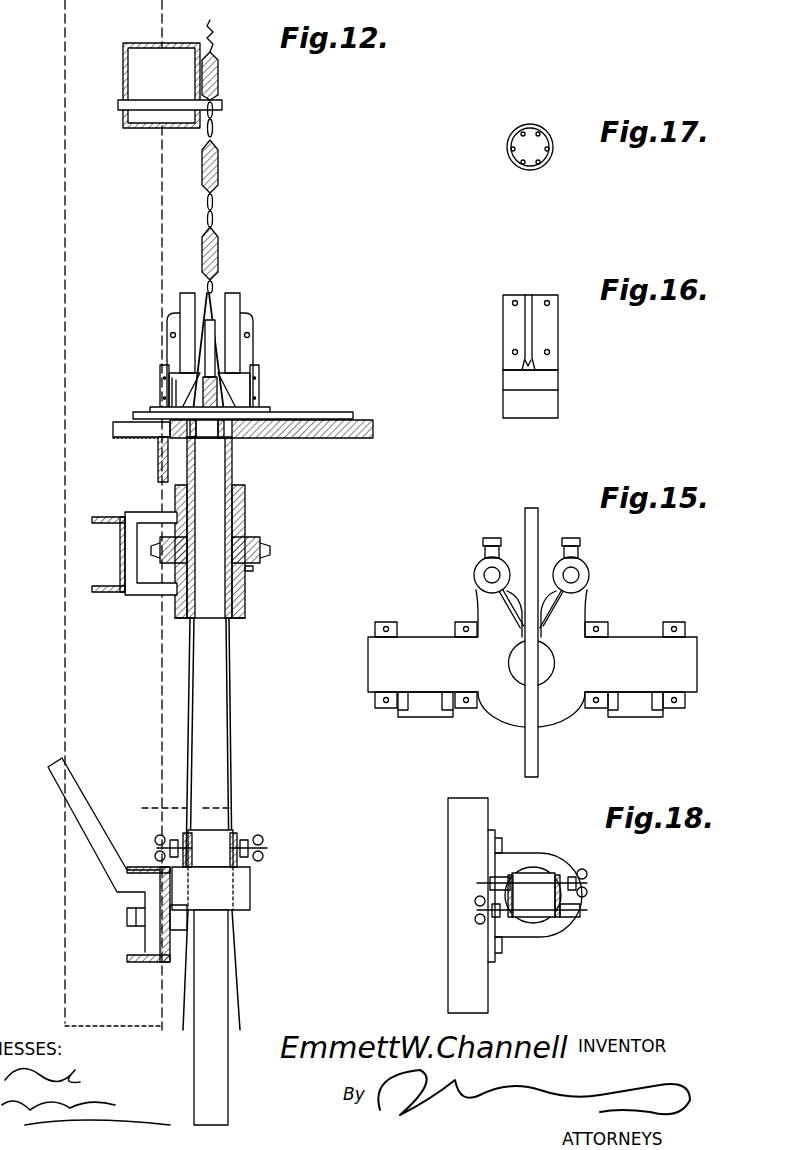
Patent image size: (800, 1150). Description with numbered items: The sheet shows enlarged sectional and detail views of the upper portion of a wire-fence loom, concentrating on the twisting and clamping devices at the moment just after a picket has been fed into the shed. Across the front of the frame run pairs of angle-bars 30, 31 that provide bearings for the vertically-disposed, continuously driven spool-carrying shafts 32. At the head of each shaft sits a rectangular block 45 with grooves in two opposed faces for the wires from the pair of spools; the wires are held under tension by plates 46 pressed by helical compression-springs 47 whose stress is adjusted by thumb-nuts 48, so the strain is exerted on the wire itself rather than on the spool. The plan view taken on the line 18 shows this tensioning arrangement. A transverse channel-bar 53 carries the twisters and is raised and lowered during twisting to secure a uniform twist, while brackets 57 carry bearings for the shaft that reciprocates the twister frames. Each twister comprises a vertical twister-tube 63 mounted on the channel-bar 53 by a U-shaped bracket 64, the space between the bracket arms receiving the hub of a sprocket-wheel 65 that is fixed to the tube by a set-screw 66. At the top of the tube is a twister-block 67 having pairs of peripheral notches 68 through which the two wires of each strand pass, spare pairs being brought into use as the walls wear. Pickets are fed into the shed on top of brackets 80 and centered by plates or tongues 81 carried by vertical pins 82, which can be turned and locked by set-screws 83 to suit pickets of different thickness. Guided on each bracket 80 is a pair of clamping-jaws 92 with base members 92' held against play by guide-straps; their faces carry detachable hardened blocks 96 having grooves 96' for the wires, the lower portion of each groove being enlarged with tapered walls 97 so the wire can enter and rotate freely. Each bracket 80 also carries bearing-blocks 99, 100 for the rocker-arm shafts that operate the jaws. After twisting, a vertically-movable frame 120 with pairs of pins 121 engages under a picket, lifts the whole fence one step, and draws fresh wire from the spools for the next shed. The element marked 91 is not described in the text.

In FIG. 12, the vertically-movable frame 120 is at (133, 130).
In FIG. 12, the pins 121 is at (223, 106).
In FIG. 12, the detachable blocks 96 is at (222, 351).
In FIG. 16, the detachable blocks 96 is at (551, 332).
In FIG. 16, the grooves 96' is at (541, 321).
In FIG. 16, the tapered walls 97 is at (531, 366).
In FIG. 12, the pins 82 is at (258, 368).
In FIG. 15, the pins 82 is at (592, 568).
In FIG. 15, the set-screws 83 is at (498, 528).
In FIG. 12, the angle-bars 31 is at (192, 393).
In FIG. 12, the plates or tongues 81 is at (228, 393).
In FIG. 15, the plates or tongues 81 is at (585, 602).
In FIG. 12, the clamping-jaws 92 is at (245, 399).
In FIG. 16, the clamping-jaws 92 is at (513, 394).
In FIG. 12, the base members 92' is at (269, 410).
In FIG. 12, the brackets 80 is at (328, 438).
In FIG. 15, the brackets 80 is at (380, 664).
In FIG. 12, the flange 91 is at (160, 462).
In FIG. 12, the peripheral notches 68 is at (210, 438).
In FIG. 17, the peripheral notches 68 is at (540, 133).
In FIG. 12, the twister-block 67 is at (222, 437).
In FIG. 17, the twister-block 67 is at (540, 152).
In FIG. 12, the twister-tube 63 is at (231, 470).
In FIG. 12, the U-shaped bracket 64 is at (152, 505).
In FIG. 12, the channel-bar 53 is at (108, 521).
In FIG. 12, the sprocket-wheel 65 is at (245, 528).
In FIG. 12, the set-screw 66 is at (253, 569).
In FIG. 12, the brackets 57 is at (63, 785).
In FIG. 12, the section line 18 is at (209, 809).
In FIG. 12, the block 45 is at (217, 840).
In FIG. 18, the block 45 is at (538, 895).
In FIG. 12, the plates 46 is at (187, 852).
In FIG. 18, the plates 46 is at (565, 870).
In FIG. 12, the helical compression-springs 47 is at (240, 860).
In FIG. 18, the helical compression-springs 47 is at (560, 917).
In FIG. 12, the thumb-nuts 48 is at (253, 848).
In FIG. 18, the thumb-nuts 48 is at (580, 912).
In FIG. 12, the angle-bars 30 is at (140, 962).
In FIG. 18, the angle-bars 30 is at (457, 913).
In FIG. 12, the spool-carrying shafts 32 is at (228, 1043).
In FIG. 15, the bearing-block 99 is at (420, 712).
In FIG. 15, the bearing-block 100 is at (630, 712).